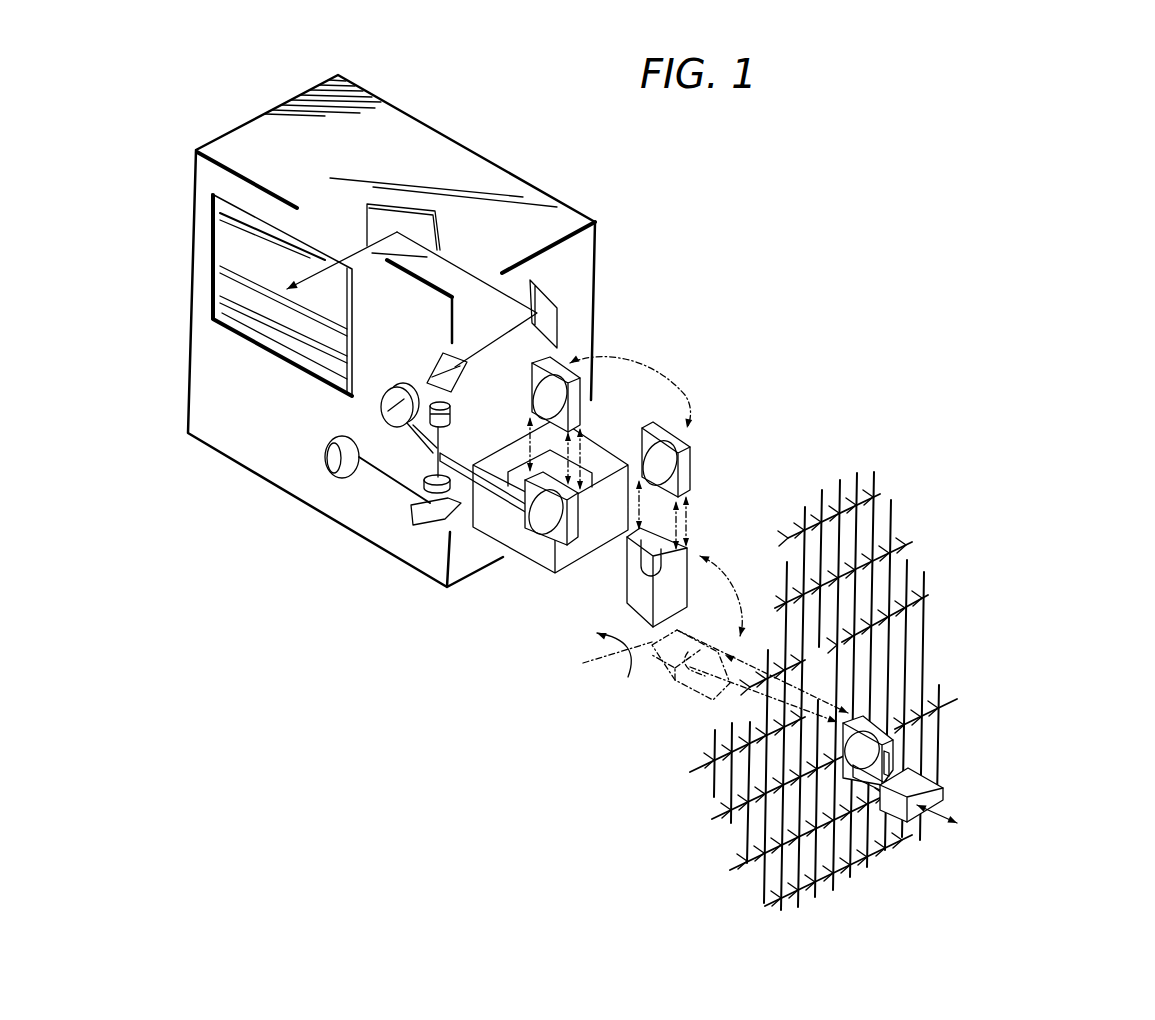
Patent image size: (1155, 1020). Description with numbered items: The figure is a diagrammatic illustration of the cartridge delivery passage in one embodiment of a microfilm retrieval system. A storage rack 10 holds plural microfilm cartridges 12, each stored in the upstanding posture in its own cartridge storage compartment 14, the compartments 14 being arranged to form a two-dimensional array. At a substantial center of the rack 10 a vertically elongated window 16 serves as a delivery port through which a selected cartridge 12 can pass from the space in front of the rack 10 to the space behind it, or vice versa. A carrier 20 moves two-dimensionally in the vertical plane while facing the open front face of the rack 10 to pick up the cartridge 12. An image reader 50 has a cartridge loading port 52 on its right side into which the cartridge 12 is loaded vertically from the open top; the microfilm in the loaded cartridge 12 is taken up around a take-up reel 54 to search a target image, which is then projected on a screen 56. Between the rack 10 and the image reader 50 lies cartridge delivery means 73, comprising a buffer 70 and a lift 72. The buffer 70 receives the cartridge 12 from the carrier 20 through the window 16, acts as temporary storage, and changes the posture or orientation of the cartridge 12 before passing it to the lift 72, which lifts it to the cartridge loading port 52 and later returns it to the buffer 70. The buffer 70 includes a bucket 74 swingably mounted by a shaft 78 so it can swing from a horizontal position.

The storage rack 10 is at (899, 520).
The microfilm cartridge 12 is at (642, 432).
The cartridge storage compartment 14 is at (910, 680).
The window 16 is at (905, 578).
The carrier 20 is at (948, 790).
The image reader 50 is at (563, 183).
The cartridge loading port 52 is at (520, 465).
The take-up reel 54 is at (393, 388).
The screen 56 is at (268, 250).
The buffer 70 is at (715, 543).
The lift 72 is at (682, 360).
The cartridge delivery means 73 is at (727, 299).
The bucket 74 is at (627, 572).
The shaft 78 is at (595, 668).